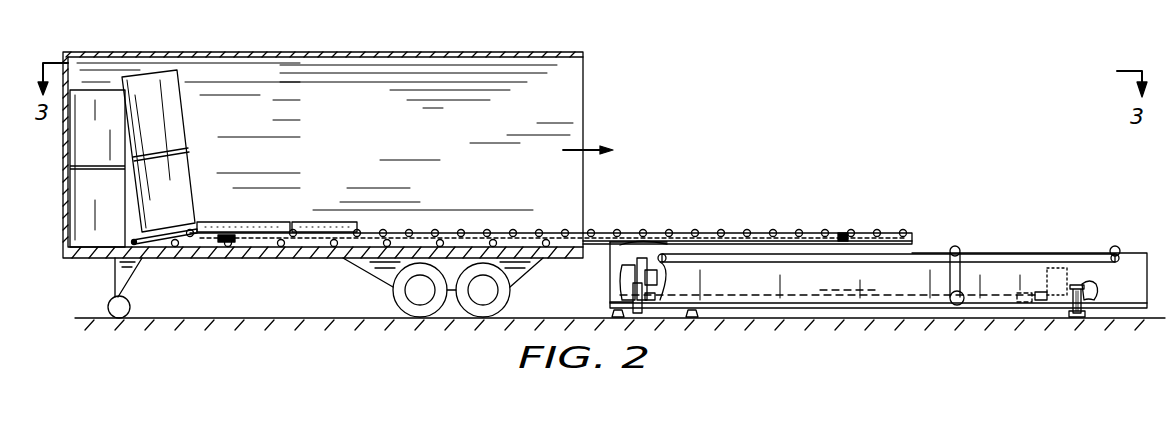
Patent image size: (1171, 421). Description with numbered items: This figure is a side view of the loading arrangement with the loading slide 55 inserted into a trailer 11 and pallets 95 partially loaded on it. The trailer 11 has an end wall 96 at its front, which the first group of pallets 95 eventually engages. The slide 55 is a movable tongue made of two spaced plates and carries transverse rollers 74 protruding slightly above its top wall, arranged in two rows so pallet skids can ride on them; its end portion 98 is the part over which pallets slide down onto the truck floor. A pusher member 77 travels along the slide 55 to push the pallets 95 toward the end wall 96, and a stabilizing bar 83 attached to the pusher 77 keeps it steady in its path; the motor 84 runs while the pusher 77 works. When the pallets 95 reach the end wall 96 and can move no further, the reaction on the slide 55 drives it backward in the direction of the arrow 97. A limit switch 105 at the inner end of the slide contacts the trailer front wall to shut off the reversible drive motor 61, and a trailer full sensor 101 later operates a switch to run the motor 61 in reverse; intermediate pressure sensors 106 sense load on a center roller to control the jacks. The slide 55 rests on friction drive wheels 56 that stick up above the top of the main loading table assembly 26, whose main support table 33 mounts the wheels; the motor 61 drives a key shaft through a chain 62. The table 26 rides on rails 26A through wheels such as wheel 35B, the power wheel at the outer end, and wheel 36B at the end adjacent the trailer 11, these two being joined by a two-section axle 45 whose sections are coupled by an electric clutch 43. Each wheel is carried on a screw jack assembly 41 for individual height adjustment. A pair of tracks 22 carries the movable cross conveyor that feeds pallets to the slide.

The trailer 11 is at (480, 52).
The arrow 97 is at (592, 150).
The end wall 96 is at (63, 180).
The pallets 95 is at (185, 157).
The pusher member 77 is at (245, 222).
The stabilizing bar 83 is at (310, 222).
The limit switch 105 is at (133, 244).
The end portion 98 is at (157, 244).
The trailer full sensor 101 is at (222, 244).
The intermediate pressure sensors 106 is at (337, 247).
The transverse rollers 74 is at (667, 232).
The motor 84 is at (843, 233).
The loading slide 55 is at (888, 233).
The friction drive wheels 56 is at (960, 248).
The main loading table assembly 26 is at (1155, 268).
The wheel 36B is at (630, 305).
The screw jack assembly 41 is at (652, 275).
The tracks 22 is at (692, 317).
The main support table 33 is at (848, 298).
The chain 62 is at (963, 278).
The reversible drive motor 61 is at (952, 297).
The electric clutch 43 is at (1020, 305).
The axle 45 is at (1040, 303).
The rails 26A is at (1077, 317).
The wheel 35B is at (1092, 300).